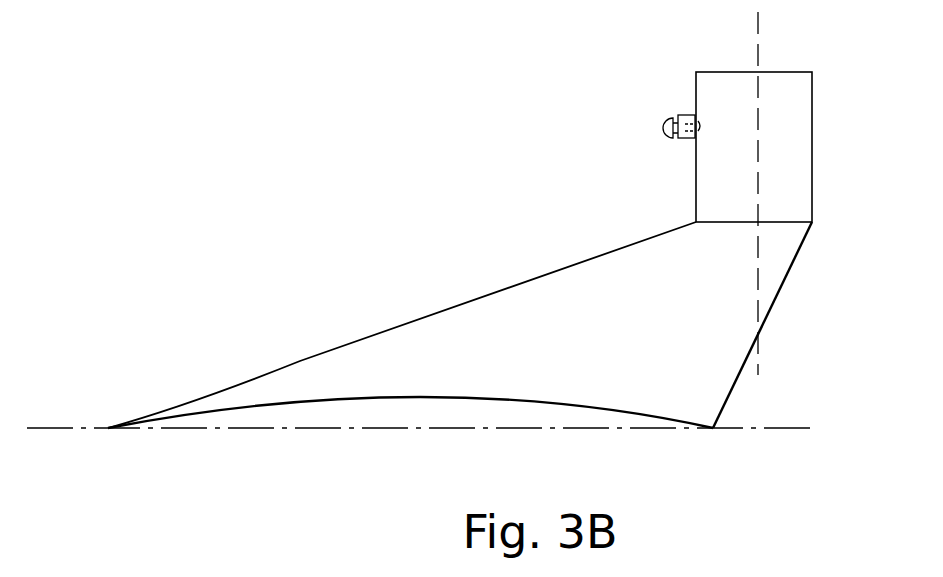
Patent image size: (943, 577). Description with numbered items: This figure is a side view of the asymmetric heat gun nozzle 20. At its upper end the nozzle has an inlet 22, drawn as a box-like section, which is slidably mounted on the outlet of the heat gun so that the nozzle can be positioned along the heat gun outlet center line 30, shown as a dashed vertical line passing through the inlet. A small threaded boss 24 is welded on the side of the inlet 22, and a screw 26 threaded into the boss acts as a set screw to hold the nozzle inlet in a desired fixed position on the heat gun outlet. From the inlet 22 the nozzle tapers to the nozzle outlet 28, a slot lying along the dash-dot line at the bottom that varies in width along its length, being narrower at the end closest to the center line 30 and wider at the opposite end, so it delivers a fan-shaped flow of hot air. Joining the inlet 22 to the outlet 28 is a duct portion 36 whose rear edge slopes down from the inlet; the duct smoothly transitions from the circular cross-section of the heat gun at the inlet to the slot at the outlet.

The asymmetric heat gun nozzle 20 is at (512, 270).
The inlet 22 is at (803, 121).
The threaded boss 24 is at (690, 111).
The screw 26 is at (663, 130).
The nozzle outlet 28 is at (463, 398).
The heat gun outlet center line 30 is at (759, 38).
The duct portion 36 is at (720, 358).